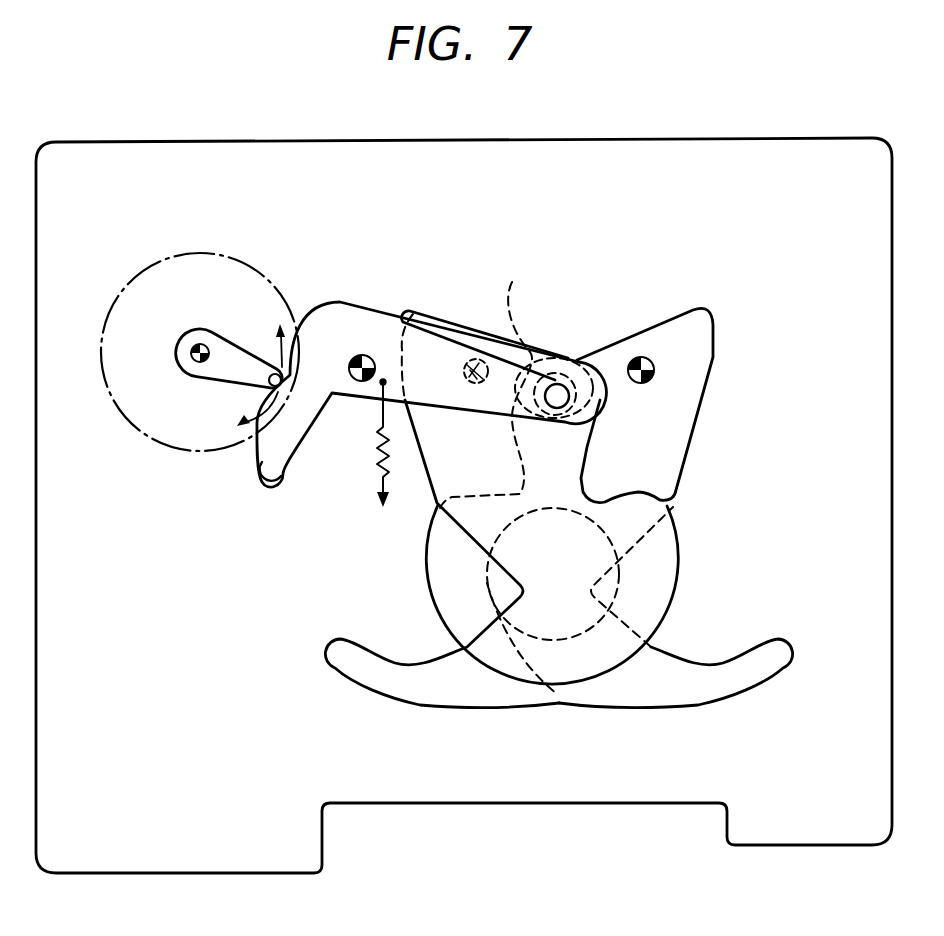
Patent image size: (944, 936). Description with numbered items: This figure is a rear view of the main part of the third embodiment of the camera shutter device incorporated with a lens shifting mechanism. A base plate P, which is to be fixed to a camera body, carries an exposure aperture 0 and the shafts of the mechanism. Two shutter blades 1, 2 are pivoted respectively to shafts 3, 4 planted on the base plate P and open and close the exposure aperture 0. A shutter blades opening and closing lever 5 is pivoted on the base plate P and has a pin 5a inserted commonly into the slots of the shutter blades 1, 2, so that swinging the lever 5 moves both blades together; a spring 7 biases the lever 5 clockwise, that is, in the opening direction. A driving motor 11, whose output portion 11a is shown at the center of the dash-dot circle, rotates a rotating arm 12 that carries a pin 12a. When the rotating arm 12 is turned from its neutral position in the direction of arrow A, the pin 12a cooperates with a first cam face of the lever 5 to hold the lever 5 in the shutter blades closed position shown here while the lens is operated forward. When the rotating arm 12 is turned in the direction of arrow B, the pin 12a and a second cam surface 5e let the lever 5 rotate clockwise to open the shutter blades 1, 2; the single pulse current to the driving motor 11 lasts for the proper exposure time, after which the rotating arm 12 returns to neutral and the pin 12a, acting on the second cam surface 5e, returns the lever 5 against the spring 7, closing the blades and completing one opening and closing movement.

The base plate P is at (103, 148).
The shutter blades opening and closing lever 5 is at (333, 312).
The second cam surface 5e is at (282, 486).
The pin 5a is at (558, 388).
The spring 7 is at (376, 484).
The shutter blade 1 is at (381, 742).
The shutter blade 2 is at (738, 680).
The exposure aperture 0 is at (520, 634).
The shaft 3 is at (468, 359).
The shaft 4 is at (645, 360).
The driving motor 11 is at (137, 437).
The pivot shaft 11a is at (186, 360).
The rotating arm 12 is at (213, 378).
The pin 12a is at (277, 363).
The arrow A is at (277, 336).
The arrow B is at (249, 420).